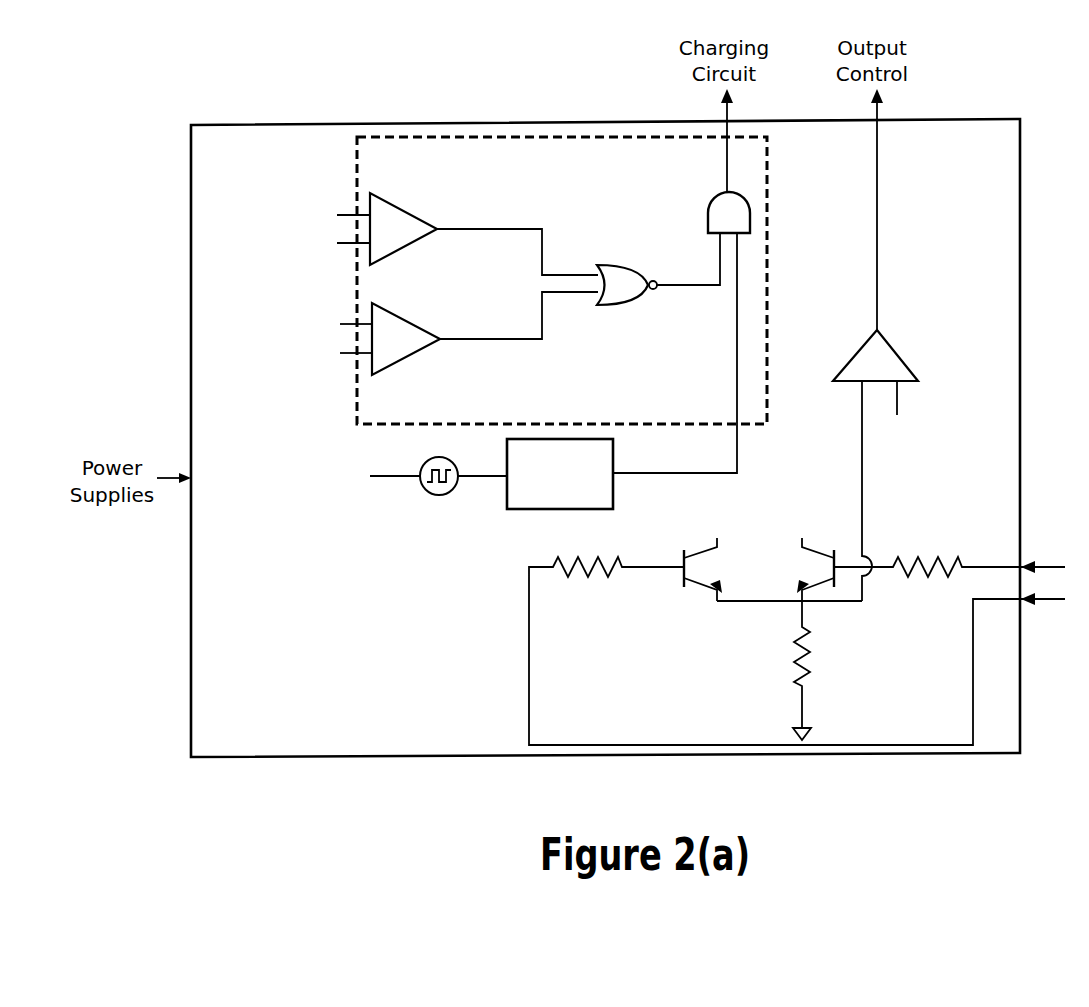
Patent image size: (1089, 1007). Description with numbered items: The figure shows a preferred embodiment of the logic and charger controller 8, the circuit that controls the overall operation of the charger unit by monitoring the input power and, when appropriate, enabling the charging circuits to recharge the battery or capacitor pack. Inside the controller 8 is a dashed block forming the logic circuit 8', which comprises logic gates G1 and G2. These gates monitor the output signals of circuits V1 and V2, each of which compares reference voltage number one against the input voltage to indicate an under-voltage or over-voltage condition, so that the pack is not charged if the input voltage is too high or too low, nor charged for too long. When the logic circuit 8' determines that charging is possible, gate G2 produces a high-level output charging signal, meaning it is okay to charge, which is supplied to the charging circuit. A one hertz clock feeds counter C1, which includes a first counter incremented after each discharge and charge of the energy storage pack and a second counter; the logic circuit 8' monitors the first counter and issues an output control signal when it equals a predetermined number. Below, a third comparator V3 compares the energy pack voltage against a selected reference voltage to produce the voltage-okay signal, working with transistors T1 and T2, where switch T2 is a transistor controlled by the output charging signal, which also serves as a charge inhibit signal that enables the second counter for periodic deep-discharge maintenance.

The logic and charger controller 8 is at (600, 415).
The logic circuit 8' is at (552, 273).
The comparator circuit V1 is at (403, 229).
The comparator circuit V2 is at (406, 339).
The voltage OK comparator V3 is at (875, 356).
The logic gate G1 is at (627, 285).
The logic gate G2 is at (729, 213).
The counter C1 is at (560, 474).
The transistor T1 is at (703, 569).
The switch T2 is at (815, 569).